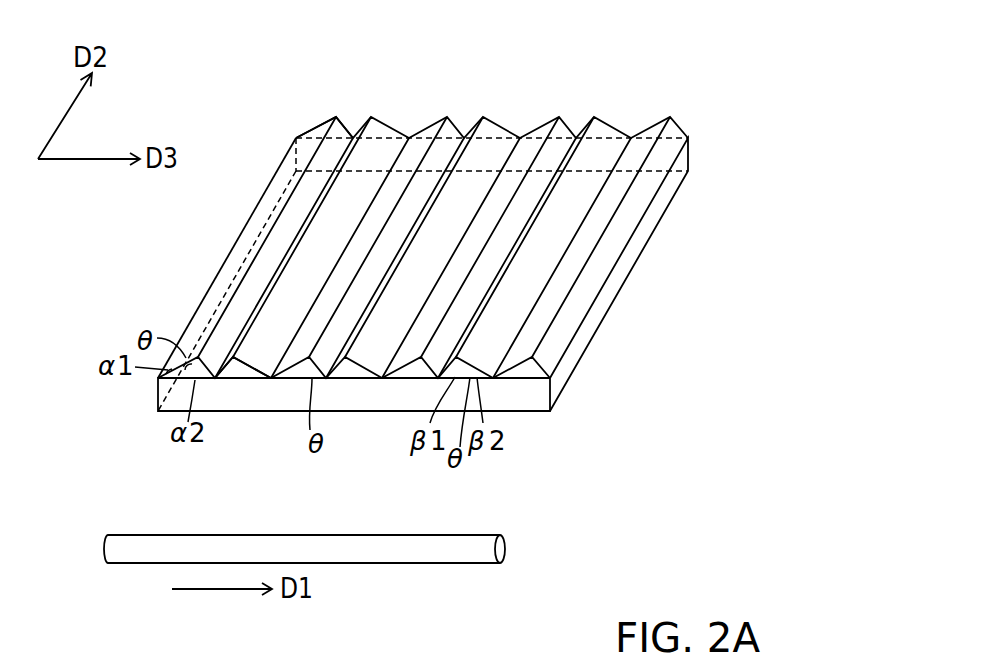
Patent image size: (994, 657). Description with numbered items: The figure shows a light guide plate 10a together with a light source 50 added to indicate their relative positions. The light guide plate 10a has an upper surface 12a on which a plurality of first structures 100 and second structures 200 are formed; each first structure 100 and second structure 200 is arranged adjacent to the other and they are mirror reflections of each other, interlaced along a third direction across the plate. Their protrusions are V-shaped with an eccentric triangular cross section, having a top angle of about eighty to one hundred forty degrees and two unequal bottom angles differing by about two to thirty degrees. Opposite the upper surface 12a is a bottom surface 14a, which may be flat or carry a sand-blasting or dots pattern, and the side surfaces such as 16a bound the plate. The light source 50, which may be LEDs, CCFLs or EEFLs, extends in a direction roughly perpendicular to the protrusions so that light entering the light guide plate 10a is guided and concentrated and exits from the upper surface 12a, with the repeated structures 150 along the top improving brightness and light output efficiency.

The light guide plate 10a is at (810, 72).
The upper surface 12a is at (637, 112).
The bottom surface 14a is at (590, 343).
The light incident surface 16a is at (542, 384).
The light source 50 is at (507, 547).
The first structure 100 is at (173, 380).
The microstructure 150 is at (465, 123).
The second structure 200 is at (233, 372).